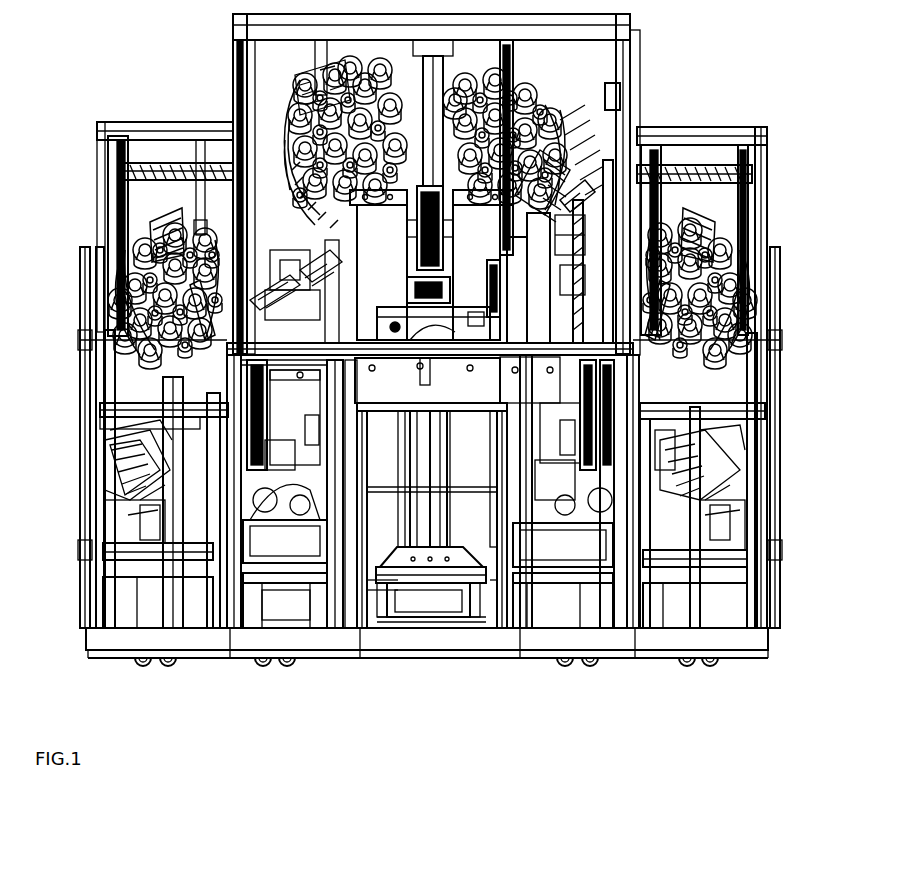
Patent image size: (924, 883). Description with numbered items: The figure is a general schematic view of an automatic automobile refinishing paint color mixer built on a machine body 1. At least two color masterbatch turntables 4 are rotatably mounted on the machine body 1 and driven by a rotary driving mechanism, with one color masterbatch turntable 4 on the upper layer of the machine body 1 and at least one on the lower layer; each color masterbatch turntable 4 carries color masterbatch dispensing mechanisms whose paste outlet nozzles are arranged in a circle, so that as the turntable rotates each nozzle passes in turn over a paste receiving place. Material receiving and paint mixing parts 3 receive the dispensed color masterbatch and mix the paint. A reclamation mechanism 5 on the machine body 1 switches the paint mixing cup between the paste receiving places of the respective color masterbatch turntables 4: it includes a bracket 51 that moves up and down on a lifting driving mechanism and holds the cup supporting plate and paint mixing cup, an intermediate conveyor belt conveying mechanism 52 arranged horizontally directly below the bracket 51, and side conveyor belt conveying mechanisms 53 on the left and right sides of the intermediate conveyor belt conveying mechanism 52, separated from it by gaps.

The machine body 1 is at (112, 655).
The material receiving and paint mixing part 3 is at (415, 252).
The color masterbatch turntable 4 is at (565, 107).
The reclamation mechanism 5 is at (479, 543).
The bracket 51 is at (423, 593).
The intermediate conveyor belt conveying mechanism 52 is at (358, 600).
The side conveyor belt conveying mechanism 53 is at (260, 610).